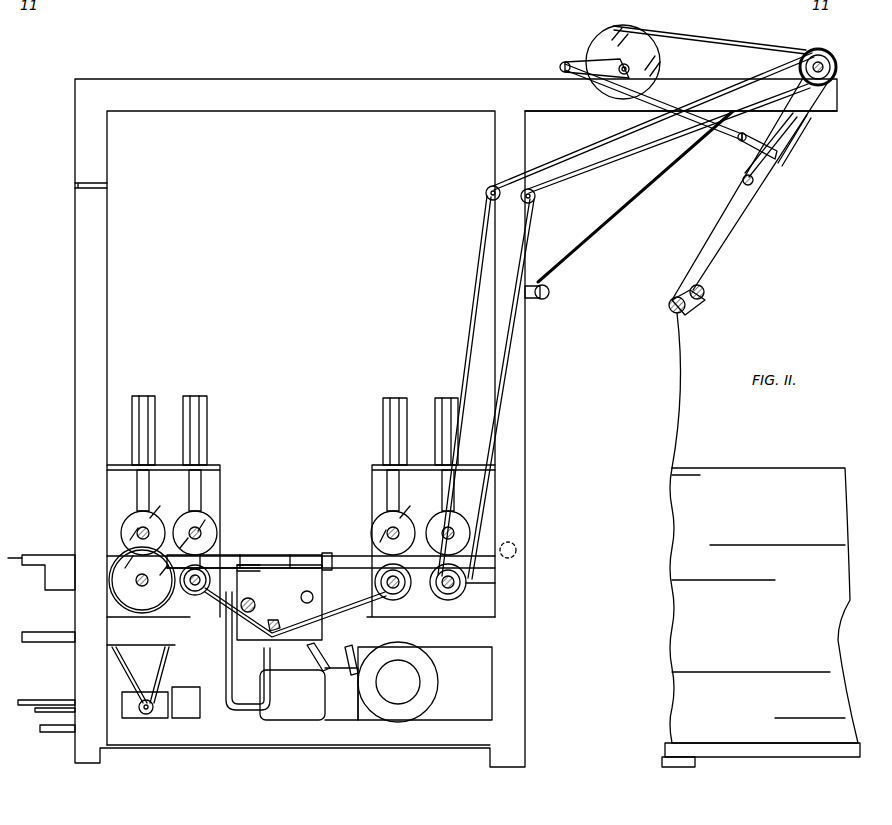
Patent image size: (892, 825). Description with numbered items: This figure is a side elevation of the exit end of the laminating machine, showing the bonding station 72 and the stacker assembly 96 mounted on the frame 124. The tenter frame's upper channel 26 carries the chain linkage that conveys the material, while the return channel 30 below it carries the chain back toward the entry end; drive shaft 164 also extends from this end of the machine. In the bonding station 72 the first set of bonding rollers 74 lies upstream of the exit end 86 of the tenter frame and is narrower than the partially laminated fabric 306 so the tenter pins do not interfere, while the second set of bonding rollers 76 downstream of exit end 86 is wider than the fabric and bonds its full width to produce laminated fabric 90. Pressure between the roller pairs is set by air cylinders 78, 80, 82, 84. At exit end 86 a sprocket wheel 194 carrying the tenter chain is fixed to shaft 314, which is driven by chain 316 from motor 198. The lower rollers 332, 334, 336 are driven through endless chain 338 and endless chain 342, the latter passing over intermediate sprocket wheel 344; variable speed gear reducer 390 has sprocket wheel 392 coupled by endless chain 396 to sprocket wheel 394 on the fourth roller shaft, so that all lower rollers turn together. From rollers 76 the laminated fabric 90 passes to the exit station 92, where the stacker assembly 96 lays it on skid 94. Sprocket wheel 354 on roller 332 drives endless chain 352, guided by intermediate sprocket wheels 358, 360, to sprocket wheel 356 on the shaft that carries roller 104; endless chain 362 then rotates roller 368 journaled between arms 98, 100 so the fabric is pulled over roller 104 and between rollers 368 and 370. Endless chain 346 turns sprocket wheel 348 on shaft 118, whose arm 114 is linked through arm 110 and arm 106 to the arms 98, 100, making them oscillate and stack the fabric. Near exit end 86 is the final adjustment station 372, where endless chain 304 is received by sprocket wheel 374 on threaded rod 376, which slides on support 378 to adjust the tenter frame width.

The channel 26 is at (42, 555).
The return channel 30 is at (46, 632).
The bonding station 72 is at (285, 327).
The first set of bonding rollers 74 is at (185, 516).
The second set of bonding rollers 76 is at (433, 520).
The air cylinder 78 is at (143, 398).
The air cylinder 80 is at (195, 398).
The air cylinder 82 is at (394, 400).
The air cylinder 84 is at (445, 400).
The exit end of tenter frame 86 is at (300, 553).
The laminated fabric 90 is at (613, 220).
The exit station 92 is at (822, 468).
The skid 94 is at (754, 758).
The stacker assembly 96 is at (828, 194).
The arm 98 is at (745, 180).
The arm 100 is at (740, 210).
The roller 104 is at (830, 50).
The arm 106 is at (750, 148).
The arm 110 is at (623, 91).
The arm 114 is at (588, 59).
The shaft 118 is at (650, 68).
The frame 124 is at (472, 79).
The drive shaft 164 is at (35, 700).
The sprocket wheel 194 is at (328, 553).
The motor 198 is at (432, 690).
The endless chain 304 is at (46, 732).
The partially laminated fabric 306 is at (16, 556).
The shaft 314 is at (303, 595).
The chain 316 is at (322, 663).
The lower roller 332 is at (480, 584).
The lower roller 334 is at (374, 580).
The lower roller 336 is at (214, 574).
The endless chain 338 is at (397, 602).
The endless chain 342 is at (268, 562).
The intermediate sprocket wheel 344 is at (290, 615).
The endless chain 346 is at (743, 43).
The sprocket wheel 348 is at (606, 38).
The endless chain 352 is at (472, 252).
The sprocket wheel 354 is at (462, 600).
The sprocket wheel 356 is at (838, 60).
The intermediate sprocket wheel 358 is at (485, 193).
The intermediate sprocket wheel 360 is at (536, 197).
The endless chain 362 is at (792, 150).
The roller 368 is at (670, 311).
The roller 370 is at (706, 295).
The final adjustment station 372 is at (220, 623).
The sprocket wheel 374 is at (250, 598).
The threaded rod 376 is at (247, 605).
The support 378 is at (282, 694).
The variable speed gear reducer 390 is at (127, 718).
The sprocket wheel 392 is at (150, 714).
The sprocket wheel 394 is at (112, 562).
The endless chain 396 is at (123, 683).